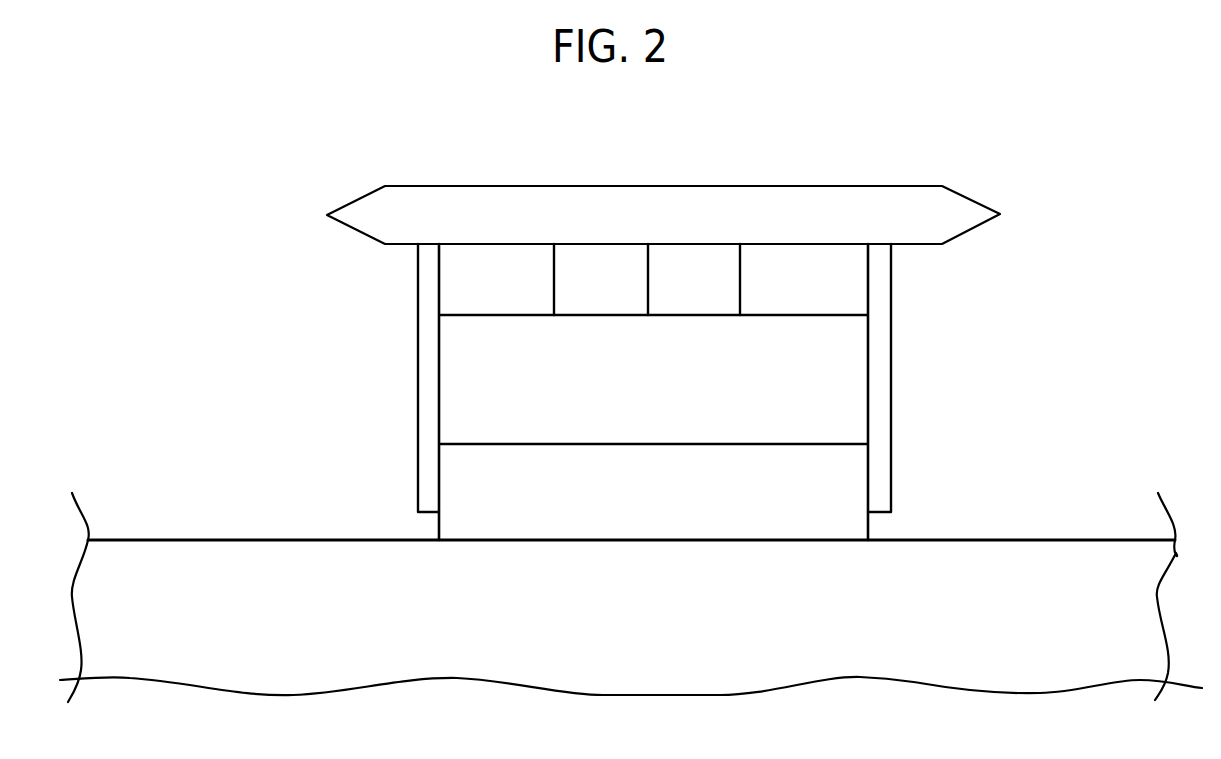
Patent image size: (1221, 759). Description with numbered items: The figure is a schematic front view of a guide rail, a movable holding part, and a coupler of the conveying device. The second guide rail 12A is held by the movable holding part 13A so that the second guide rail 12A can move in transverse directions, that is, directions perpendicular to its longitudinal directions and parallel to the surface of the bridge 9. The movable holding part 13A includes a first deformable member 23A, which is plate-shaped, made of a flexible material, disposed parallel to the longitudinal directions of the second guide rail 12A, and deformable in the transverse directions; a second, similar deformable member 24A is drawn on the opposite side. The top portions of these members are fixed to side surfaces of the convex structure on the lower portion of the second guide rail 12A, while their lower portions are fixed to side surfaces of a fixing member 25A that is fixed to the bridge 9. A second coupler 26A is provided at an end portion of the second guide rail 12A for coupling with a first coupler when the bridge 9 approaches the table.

The bridge 9 is at (115, 560).
The second guide rail 12A is at (887, 200).
The movable holding part 13A is at (1017, 365).
The first deformable member 23A is at (422, 400).
The right spacer 24A is at (877, 398).
The fixing member 25A is at (628, 523).
The second coupler 26A is at (680, 272).